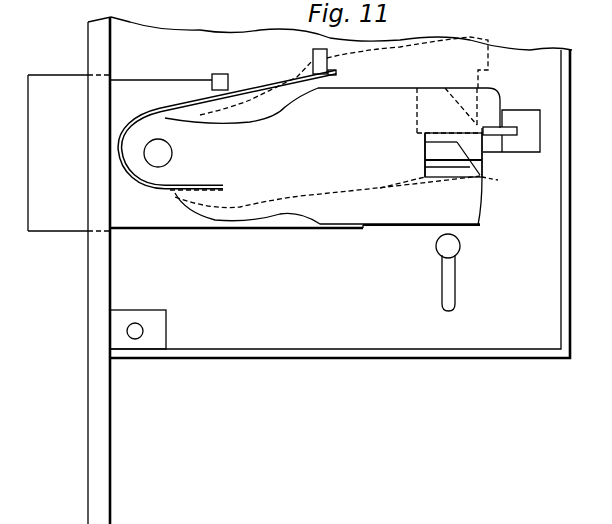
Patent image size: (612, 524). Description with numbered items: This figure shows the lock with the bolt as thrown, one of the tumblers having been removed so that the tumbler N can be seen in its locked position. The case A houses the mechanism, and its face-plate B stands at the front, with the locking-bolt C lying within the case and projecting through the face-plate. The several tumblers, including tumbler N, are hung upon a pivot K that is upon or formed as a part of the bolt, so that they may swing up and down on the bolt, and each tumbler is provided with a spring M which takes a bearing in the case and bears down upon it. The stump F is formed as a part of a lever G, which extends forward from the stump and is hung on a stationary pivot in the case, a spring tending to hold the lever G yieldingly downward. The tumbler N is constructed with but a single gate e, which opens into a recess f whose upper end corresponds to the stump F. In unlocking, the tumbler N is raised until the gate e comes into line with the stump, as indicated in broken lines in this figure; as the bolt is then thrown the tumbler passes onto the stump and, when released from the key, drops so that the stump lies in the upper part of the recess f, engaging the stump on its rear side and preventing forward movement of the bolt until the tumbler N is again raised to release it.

The case A is at (340, 204).
The face-plate B is at (85, 270).
The locking-bolt C is at (69, 153).
The tumbler spring M is at (228, 118).
The tumbler N is at (332, 131).
The pivot K is at (158, 153).
The stump F is at (505, 125).
The lever G is at (511, 131).
The gate e is at (497, 182).
The recess f is at (434, 151).